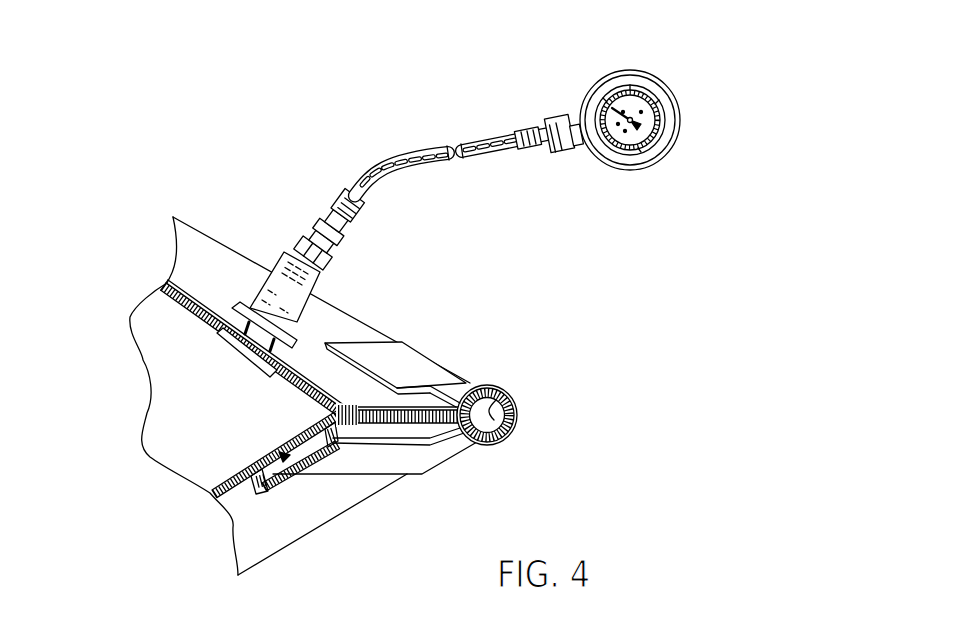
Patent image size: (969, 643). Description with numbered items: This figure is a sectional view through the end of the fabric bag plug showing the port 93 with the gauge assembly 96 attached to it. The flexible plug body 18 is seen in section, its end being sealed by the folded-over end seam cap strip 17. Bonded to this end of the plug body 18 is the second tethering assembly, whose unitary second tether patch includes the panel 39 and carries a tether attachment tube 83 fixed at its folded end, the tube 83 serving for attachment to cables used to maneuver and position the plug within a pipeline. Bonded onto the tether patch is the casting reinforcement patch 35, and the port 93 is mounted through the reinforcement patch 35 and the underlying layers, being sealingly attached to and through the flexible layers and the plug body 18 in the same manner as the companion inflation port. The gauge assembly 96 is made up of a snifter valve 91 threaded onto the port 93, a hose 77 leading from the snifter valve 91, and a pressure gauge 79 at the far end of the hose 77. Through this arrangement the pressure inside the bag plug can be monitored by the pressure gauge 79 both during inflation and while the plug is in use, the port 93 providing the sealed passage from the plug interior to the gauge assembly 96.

The second end seam cap strip 17 is at (407, 360).
The plug body 18 is at (237, 472).
The casting reinforcement patch 35 is at (200, 290).
The tether patch panel 39 is at (513, 400).
The hose 77 is at (385, 150).
The pressure gauge 79 is at (683, 117).
The tether attachment tube 83 is at (517, 431).
The snifter valve 91 is at (337, 254).
The port 93 is at (280, 284).
The gauge assembly 96 is at (507, 128).